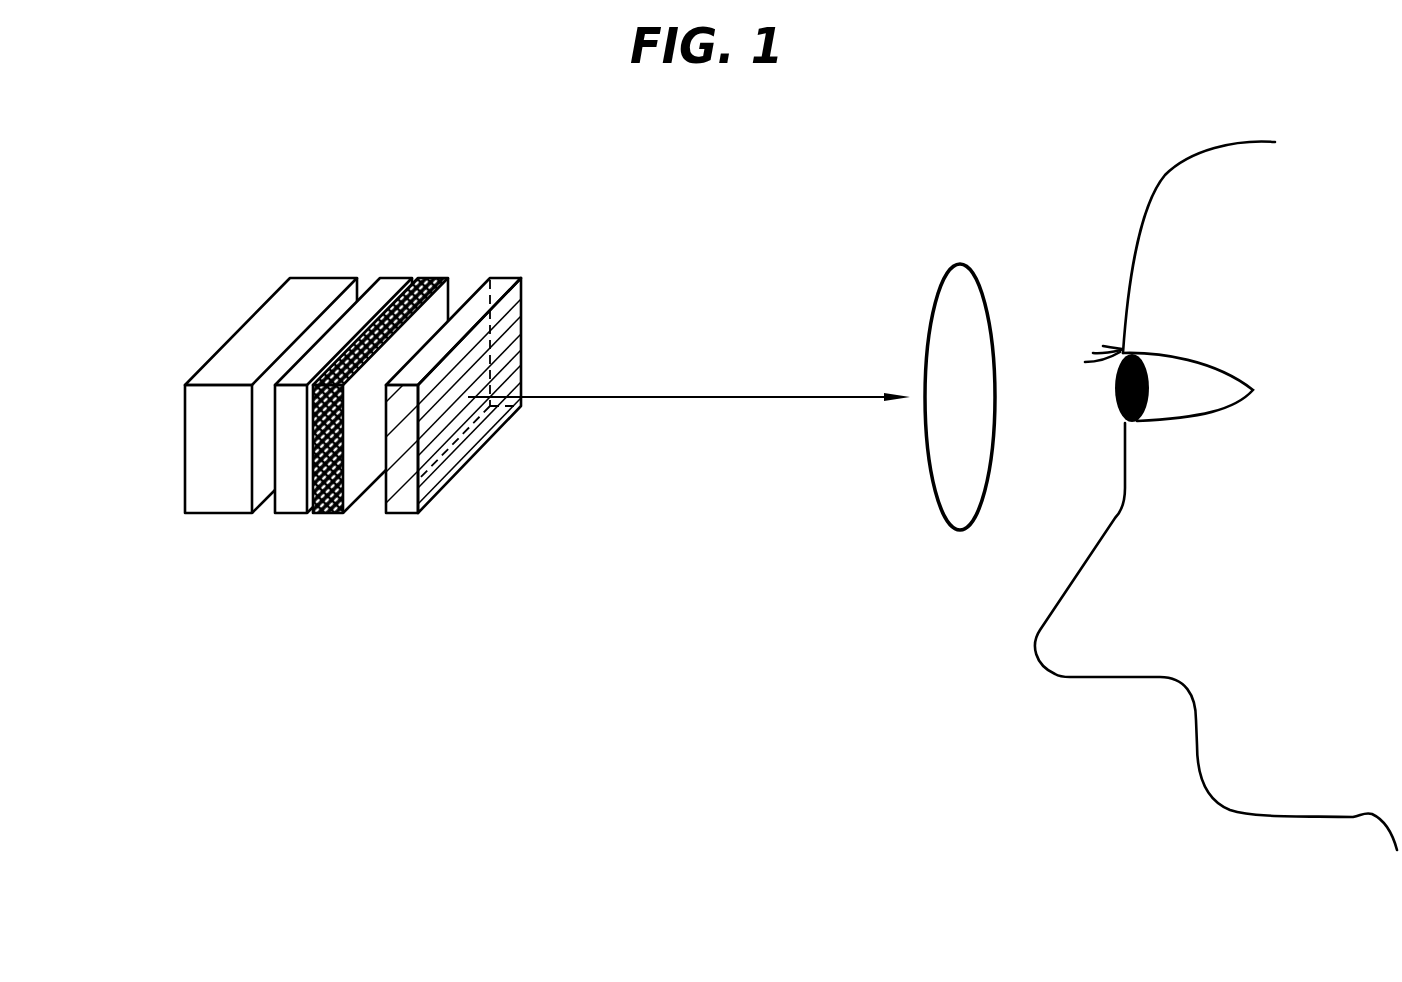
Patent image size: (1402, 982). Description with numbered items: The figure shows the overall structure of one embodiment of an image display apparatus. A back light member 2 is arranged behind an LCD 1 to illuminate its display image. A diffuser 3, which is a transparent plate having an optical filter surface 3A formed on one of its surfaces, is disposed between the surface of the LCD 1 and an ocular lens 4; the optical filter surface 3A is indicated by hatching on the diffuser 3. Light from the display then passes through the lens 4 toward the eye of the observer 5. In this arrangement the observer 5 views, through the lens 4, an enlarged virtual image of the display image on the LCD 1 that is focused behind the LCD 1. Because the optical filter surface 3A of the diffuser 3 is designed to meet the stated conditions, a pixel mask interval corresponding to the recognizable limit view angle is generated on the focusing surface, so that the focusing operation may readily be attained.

The LCD 1 is at (299, 534).
The back light member 2 is at (258, 336).
The diffuser 3 is at (426, 540).
The optical filter surface 3A is at (474, 290).
The ocular lens 4 is at (947, 277).
The observer 5 is at (1162, 180).